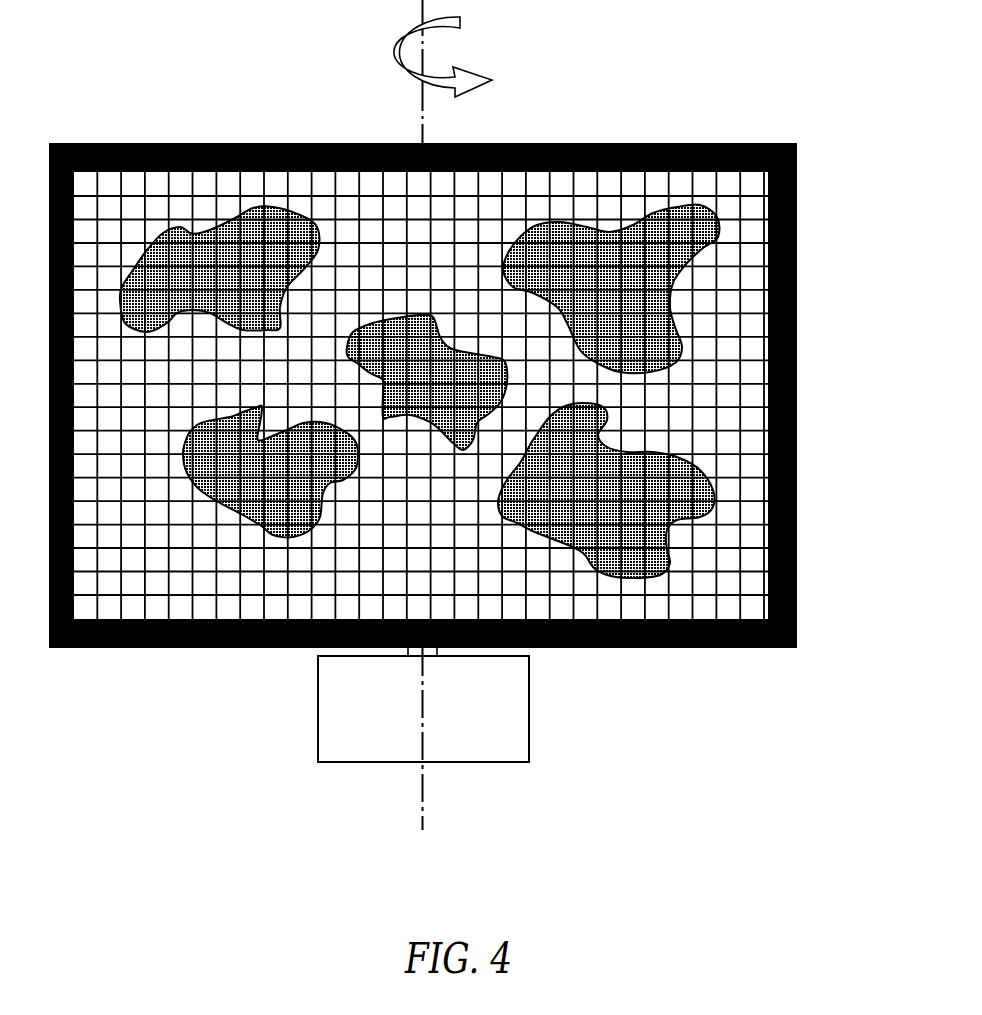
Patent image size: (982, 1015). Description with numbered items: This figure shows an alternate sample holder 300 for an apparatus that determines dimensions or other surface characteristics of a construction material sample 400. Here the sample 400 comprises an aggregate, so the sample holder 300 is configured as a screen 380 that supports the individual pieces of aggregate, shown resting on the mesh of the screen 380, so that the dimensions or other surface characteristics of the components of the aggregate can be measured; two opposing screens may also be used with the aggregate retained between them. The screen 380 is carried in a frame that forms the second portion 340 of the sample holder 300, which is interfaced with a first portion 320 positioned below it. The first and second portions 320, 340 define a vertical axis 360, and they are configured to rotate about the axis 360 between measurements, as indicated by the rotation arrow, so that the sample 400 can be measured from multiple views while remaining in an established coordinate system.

The sample holder 300 is at (479, 404).
The first portion 320 is at (497, 708).
The second portion 340 is at (693, 648).
The vertical axis 360 is at (422, 784).
The screen 380 is at (720, 288).
The sample 400 is at (225, 250).